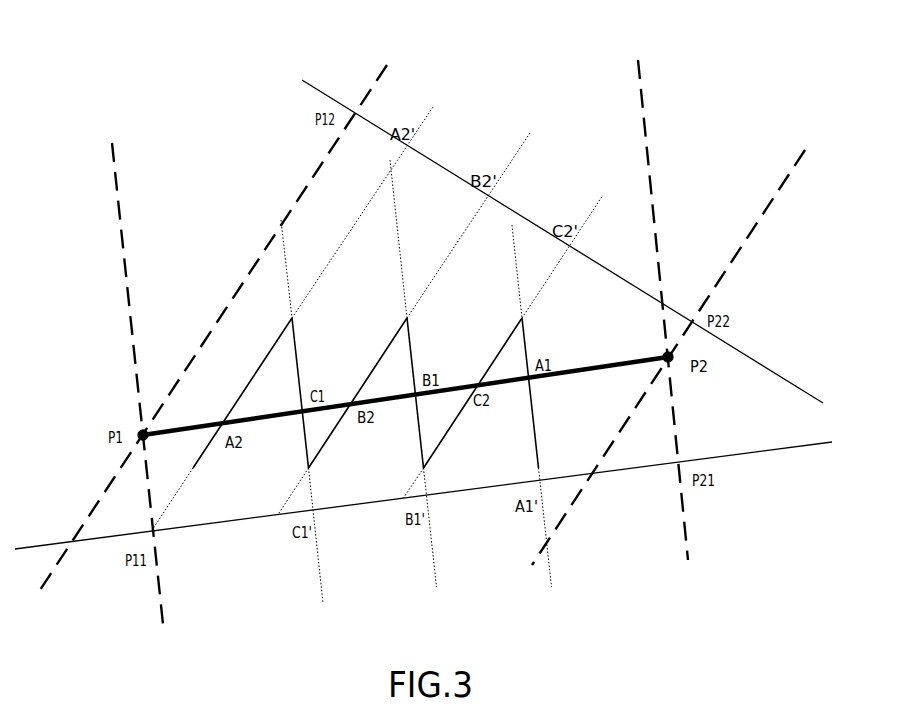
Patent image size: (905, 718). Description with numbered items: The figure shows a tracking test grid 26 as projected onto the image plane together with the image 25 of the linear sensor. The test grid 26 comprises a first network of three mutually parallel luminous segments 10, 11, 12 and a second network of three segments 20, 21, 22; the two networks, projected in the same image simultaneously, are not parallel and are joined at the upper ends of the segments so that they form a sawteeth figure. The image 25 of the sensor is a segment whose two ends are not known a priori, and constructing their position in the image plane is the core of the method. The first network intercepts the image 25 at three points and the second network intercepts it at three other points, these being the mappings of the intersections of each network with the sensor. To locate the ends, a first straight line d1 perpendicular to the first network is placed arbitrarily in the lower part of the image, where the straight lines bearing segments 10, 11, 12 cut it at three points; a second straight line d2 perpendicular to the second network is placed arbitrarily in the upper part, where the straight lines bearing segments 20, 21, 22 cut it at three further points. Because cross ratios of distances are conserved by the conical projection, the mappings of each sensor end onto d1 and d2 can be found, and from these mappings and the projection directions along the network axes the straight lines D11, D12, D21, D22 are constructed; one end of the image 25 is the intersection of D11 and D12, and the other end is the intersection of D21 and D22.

The luminous segment 10 is at (302, 345).
The luminous segment 11 is at (417, 345).
The luminous segment 12 is at (528, 330).
The segment 20 is at (256, 368).
The segment 21 is at (328, 458).
The segment 22 is at (443, 450).
The image of the sensor 25 is at (600, 372).
The tracking test grid 26 is at (553, 432).
The straight line D11 is at (110, 172).
The straight line D12 is at (365, 80).
The straight line D21 is at (635, 83).
The straight line D22 is at (790, 165).
The first straight line d1 is at (815, 453).
The second straight line d2 is at (807, 383).